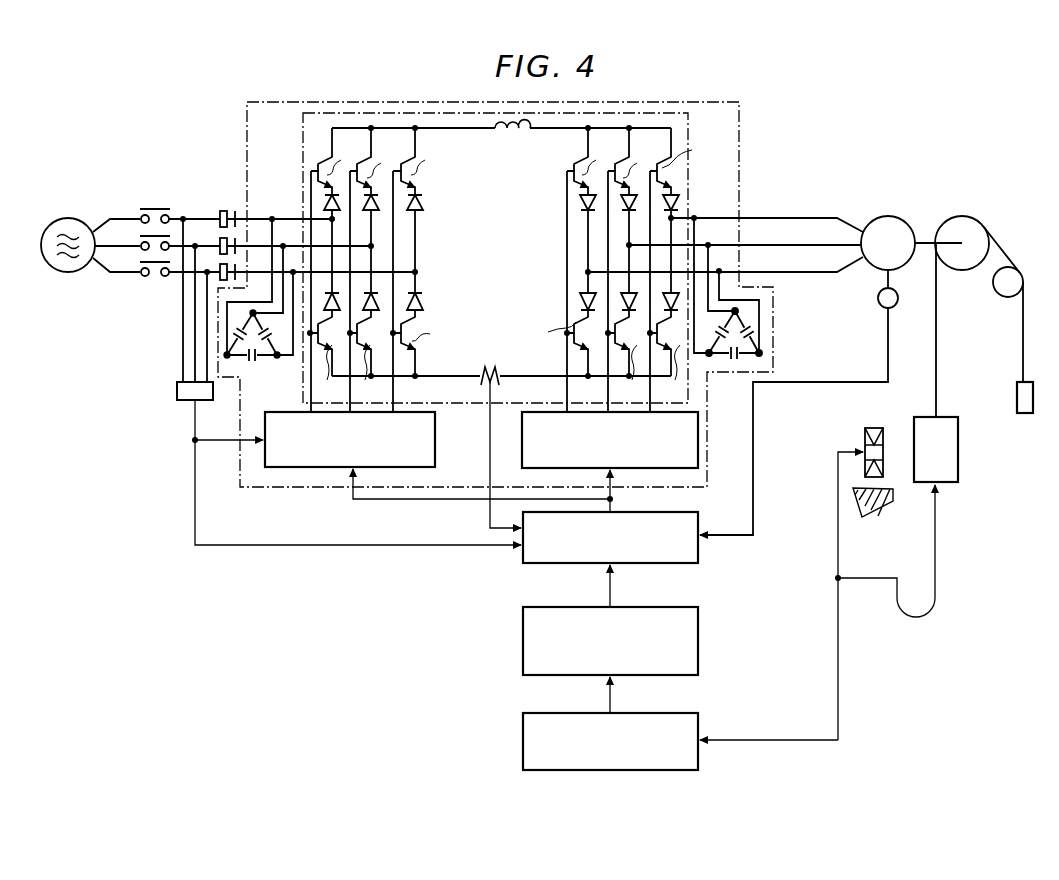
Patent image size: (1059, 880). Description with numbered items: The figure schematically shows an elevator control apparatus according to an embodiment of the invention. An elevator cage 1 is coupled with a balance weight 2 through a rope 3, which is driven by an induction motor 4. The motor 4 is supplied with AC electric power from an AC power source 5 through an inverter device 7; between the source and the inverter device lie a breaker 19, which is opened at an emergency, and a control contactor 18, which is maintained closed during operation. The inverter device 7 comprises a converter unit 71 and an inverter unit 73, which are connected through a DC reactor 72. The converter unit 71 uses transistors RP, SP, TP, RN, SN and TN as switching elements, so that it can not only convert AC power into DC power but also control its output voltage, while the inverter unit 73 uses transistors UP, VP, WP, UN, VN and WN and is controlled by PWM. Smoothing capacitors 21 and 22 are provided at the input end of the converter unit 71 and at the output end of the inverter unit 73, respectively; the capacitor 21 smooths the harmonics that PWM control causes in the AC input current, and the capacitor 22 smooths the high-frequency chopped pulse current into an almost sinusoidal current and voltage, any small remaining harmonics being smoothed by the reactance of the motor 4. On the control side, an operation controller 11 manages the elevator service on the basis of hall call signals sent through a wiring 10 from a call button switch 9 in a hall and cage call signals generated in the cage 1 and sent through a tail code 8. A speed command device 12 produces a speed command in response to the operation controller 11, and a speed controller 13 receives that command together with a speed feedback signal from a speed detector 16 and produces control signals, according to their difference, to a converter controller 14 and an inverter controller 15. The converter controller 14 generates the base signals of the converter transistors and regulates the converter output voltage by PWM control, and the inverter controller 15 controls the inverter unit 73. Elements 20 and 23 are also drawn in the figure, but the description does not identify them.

The elevator cage 1 is at (952, 417).
The balance weight 2 is at (1025, 414).
The rope 3 is at (936, 323).
The induction motor 4 is at (892, 217).
The AC power source 5 is at (68, 218).
The inverter device 7 is at (697, 127).
The tail code 8 is at (937, 568).
The call button switch 9 is at (877, 428).
The wiring 10 is at (839, 550).
The operation controller 11 is at (698, 717).
The speed command device 12 is at (698, 612).
The speed controller 13 is at (698, 514).
The converter controller 14 is at (436, 423).
The inverter controller 15 is at (698, 423).
The speed detector 16 is at (884, 312).
The control contactor 18 is at (227, 210).
The breaker 19 is at (153, 208).
The voltage detector 20 is at (177, 391).
The smoothing capacitor 21 is at (268, 362).
The smoothing capacitor 22 is at (722, 360).
The current detector 23 is at (484, 368).
The converter unit 71 is at (383, 270).
The DC reactor 72 is at (512, 134).
The inverter unit 73 is at (621, 270).